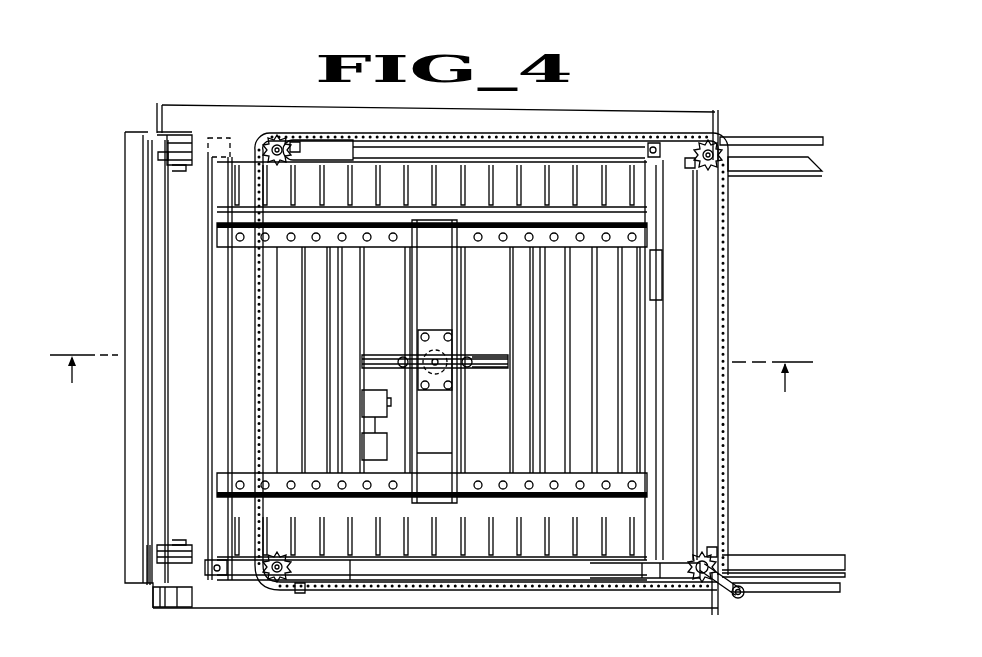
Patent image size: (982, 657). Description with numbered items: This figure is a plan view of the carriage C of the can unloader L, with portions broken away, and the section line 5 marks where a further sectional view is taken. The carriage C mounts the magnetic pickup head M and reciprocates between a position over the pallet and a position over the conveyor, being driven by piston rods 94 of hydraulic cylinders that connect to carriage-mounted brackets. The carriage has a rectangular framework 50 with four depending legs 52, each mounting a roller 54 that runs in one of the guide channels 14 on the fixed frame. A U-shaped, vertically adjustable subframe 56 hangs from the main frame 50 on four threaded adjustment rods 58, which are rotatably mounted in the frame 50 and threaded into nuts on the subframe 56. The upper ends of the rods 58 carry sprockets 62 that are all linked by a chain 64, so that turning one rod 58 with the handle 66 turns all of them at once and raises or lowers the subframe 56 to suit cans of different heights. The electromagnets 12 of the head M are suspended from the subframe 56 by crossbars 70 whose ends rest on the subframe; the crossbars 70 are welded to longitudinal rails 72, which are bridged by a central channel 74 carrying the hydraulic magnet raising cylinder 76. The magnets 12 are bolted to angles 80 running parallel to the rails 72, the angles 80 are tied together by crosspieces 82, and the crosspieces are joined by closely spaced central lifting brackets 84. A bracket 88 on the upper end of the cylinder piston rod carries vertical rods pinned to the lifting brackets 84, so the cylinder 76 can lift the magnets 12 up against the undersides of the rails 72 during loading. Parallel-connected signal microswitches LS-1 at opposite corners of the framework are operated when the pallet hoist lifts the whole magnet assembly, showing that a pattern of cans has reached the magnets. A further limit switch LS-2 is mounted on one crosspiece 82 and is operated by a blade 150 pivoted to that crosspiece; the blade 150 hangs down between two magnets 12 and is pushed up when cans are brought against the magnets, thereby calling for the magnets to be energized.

The rectangular framework 50 is at (123, 217).
The depending legs 52 is at (178, 133).
The rollers 54 is at (182, 168).
The U-shaped vertically adjustable subframe 56 is at (472, 140).
The threaded adjustment rods 58 is at (278, 145).
The sprockets 62 is at (297, 147).
The chain 64 is at (362, 133).
The handle 66 is at (720, 593).
The crossbars 70 is at (217, 270).
The longitudinal rails 72 is at (243, 213).
The central channel 74 is at (452, 494).
The hydraulic magnet raising cylinder 76 is at (440, 320).
The magnet mounting angles 80 is at (230, 472).
The crosspieces 82 is at (520, 267).
The central lifting brackets 84 is at (503, 370).
The bracket 88 is at (457, 358).
The piston rods 94 is at (807, 138).
The electromagnets 12 is at (237, 335).
The guide channels 14 is at (792, 175).
The blade 150 is at (380, 437).
The unloader L is at (655, 62).
The magnetic pickup head M is at (647, 283).
The reciprocating carriage C is at (150, 597).
The signal microswitches LS-1 is at (657, 142).
The limit switch LS-2 is at (434, 463).
The section line 5- 5 is at (431, 386).